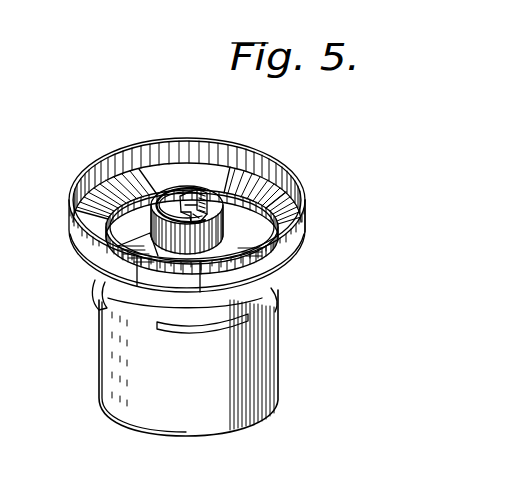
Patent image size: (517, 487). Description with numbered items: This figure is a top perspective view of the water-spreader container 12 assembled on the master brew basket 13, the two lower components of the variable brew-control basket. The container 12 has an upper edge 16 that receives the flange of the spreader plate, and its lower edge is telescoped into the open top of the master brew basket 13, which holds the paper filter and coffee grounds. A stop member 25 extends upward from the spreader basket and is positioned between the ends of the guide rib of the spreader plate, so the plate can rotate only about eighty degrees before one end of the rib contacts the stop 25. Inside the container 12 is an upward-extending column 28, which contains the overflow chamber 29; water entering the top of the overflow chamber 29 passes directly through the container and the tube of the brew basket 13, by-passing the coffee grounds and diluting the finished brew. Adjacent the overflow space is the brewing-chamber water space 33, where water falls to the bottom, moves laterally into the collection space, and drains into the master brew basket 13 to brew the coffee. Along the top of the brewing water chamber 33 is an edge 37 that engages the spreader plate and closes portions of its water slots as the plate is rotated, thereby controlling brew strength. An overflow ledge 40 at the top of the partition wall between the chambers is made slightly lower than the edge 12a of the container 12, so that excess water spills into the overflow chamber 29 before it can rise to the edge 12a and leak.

The water-spreader container 12 is at (285, 273).
The edge of the container 12a is at (290, 172).
The master brew basket 13 is at (278, 404).
The edge of the spreader-container 16 is at (118, 152).
The stop member 25 is at (304, 236).
The column 28 is at (120, 197).
The overflow chamber 29 is at (188, 197).
The brewing-chamber water space 33 is at (148, 195).
The edge 37 is at (150, 233).
The overflow ledge 40 is at (206, 194).